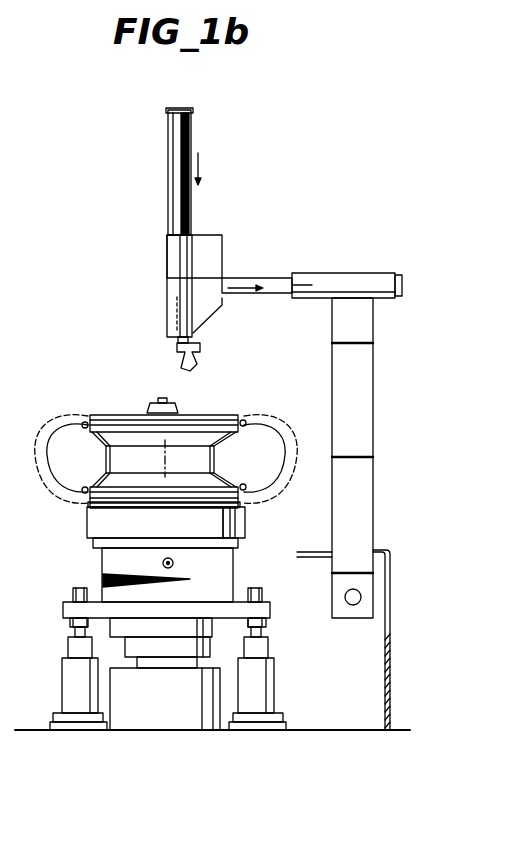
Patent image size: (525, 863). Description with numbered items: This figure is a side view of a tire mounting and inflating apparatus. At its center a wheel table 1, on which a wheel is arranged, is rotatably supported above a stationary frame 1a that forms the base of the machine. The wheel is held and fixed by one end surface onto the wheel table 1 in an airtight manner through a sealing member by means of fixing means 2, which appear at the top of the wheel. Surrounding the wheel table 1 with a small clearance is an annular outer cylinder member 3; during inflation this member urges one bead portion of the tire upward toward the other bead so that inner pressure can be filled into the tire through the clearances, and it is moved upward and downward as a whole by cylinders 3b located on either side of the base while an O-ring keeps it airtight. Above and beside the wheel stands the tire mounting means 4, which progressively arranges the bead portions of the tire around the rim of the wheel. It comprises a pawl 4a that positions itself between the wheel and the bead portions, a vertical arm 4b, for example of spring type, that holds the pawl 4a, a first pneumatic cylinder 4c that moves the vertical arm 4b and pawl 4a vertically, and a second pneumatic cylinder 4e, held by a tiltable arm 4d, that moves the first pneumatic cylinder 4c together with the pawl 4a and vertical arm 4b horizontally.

The wheel table 1 is at (240, 480).
The stationary frame 1a is at (187, 717).
The fixing means 2 is at (180, 403).
The annular outer cylinder member 3 is at (246, 527).
The cylinders 3b is at (62, 678).
The tire mounting means 4 is at (228, 240).
The pawl 4a is at (202, 361).
The vertical arm 4b is at (193, 207).
The first pneumatic cylinder 4c is at (170, 264).
The tiltable arm 4d is at (367, 388).
The second pneumatic cylinder 4e is at (360, 273).